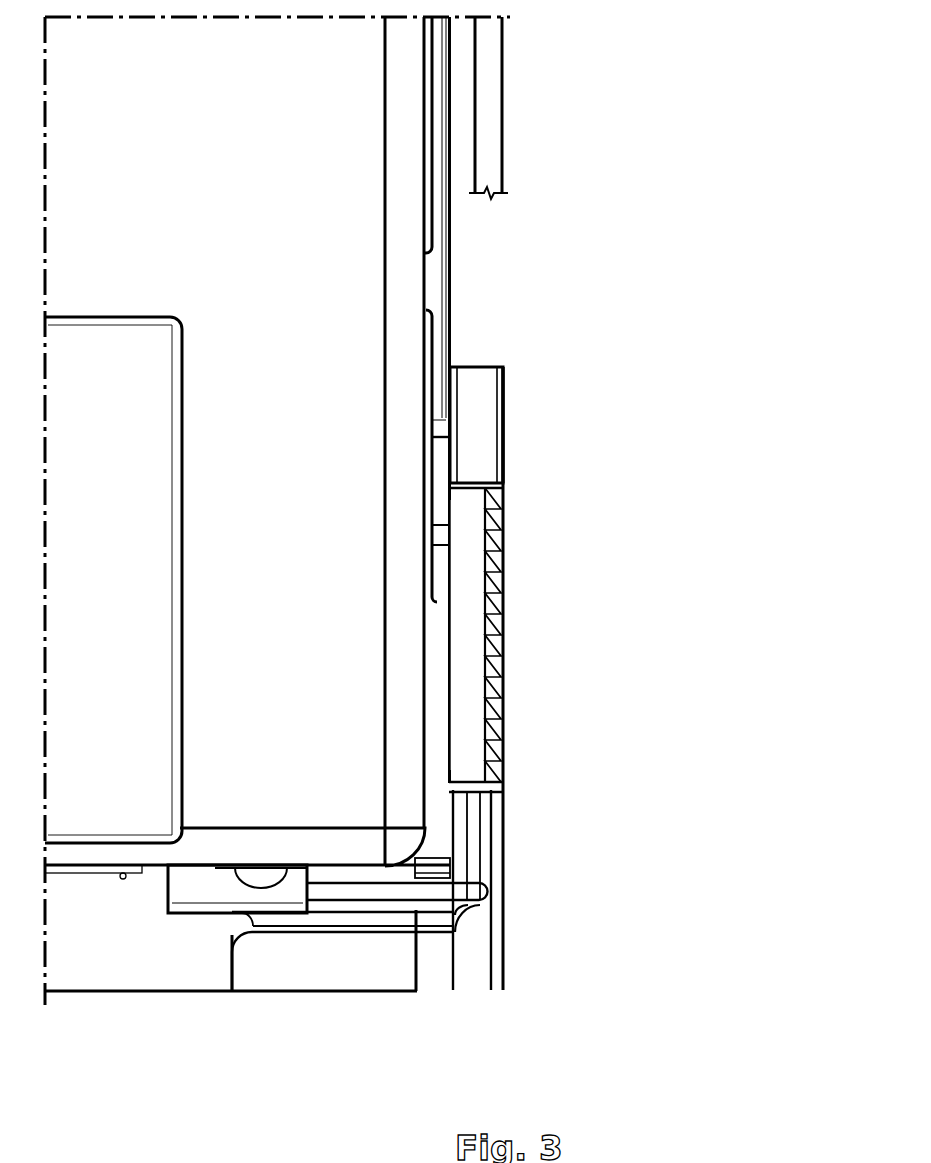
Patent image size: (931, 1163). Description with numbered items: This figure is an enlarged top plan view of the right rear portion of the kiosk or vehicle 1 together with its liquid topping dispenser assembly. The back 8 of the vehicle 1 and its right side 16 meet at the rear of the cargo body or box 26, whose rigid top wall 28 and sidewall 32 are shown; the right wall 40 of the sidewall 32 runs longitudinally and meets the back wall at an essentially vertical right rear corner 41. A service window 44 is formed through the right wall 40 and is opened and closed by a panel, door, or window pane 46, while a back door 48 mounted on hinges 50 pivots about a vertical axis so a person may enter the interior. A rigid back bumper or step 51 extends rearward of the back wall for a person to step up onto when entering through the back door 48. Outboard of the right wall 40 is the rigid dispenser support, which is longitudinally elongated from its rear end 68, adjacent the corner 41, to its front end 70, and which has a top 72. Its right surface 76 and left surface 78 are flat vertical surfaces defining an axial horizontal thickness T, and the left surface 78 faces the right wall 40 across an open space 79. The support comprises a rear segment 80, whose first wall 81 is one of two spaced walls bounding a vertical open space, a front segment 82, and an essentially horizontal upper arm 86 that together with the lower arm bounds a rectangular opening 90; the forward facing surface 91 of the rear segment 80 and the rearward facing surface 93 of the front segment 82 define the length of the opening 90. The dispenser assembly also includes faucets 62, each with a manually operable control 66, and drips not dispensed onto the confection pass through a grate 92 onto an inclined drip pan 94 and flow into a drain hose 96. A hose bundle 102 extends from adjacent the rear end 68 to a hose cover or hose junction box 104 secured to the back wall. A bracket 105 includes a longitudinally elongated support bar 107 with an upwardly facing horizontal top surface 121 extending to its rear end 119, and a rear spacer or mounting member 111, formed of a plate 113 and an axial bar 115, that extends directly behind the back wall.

The kiosk or vehicle 1 is at (703, 212).
The back 8 is at (143, 1012).
The right side 16 is at (542, 120).
The cargo body or box 26 is at (345, 98).
The top wall 28 is at (166, 258).
The sidewall 32 is at (520, 422).
The right wall 40 is at (425, 162).
The right rear corner 41 is at (397, 847).
The service window 44 is at (525, 218).
The window pane 46 is at (432, 205).
The back door 48 is at (80, 875).
The hinges 50 is at (123, 880).
The back bumper or step 51 is at (72, 992).
The faucets 62 is at (596, 662).
The control 66 is at (512, 648).
The rear end 68 is at (493, 985).
The front end 70 is at (477, 367).
The top 72 is at (365, 635).
The right side 76 is at (513, 413).
The left side 78 is at (450, 437).
The open space 79 is at (437, 623).
The rear segment 80 is at (584, 848).
The first wall 81 is at (512, 850).
The front segment 82 is at (581, 425).
The upper arm 86 is at (462, 652).
The rectangular opening 90 is at (501, 550).
The forward facing surface 91 is at (492, 782).
The grate 92 is at (380, 721).
The rearward facing surface 93 is at (473, 510).
The drip pan 94 is at (493, 722).
The drain hose 96 is at (278, 936).
The hose bundle 102 is at (480, 817).
The hose junction box 104 is at (200, 880).
The bracket 105 is at (533, 880).
The support bar 107 is at (533, 880).
The rear spacer 111 is at (344, 997).
The plate 113 is at (303, 970).
The axial bar 115 is at (380, 907).
The rear end 119 is at (488, 908).
The top surface 121 is at (508, 884).
The horizontal thickness T is at (512, 462).